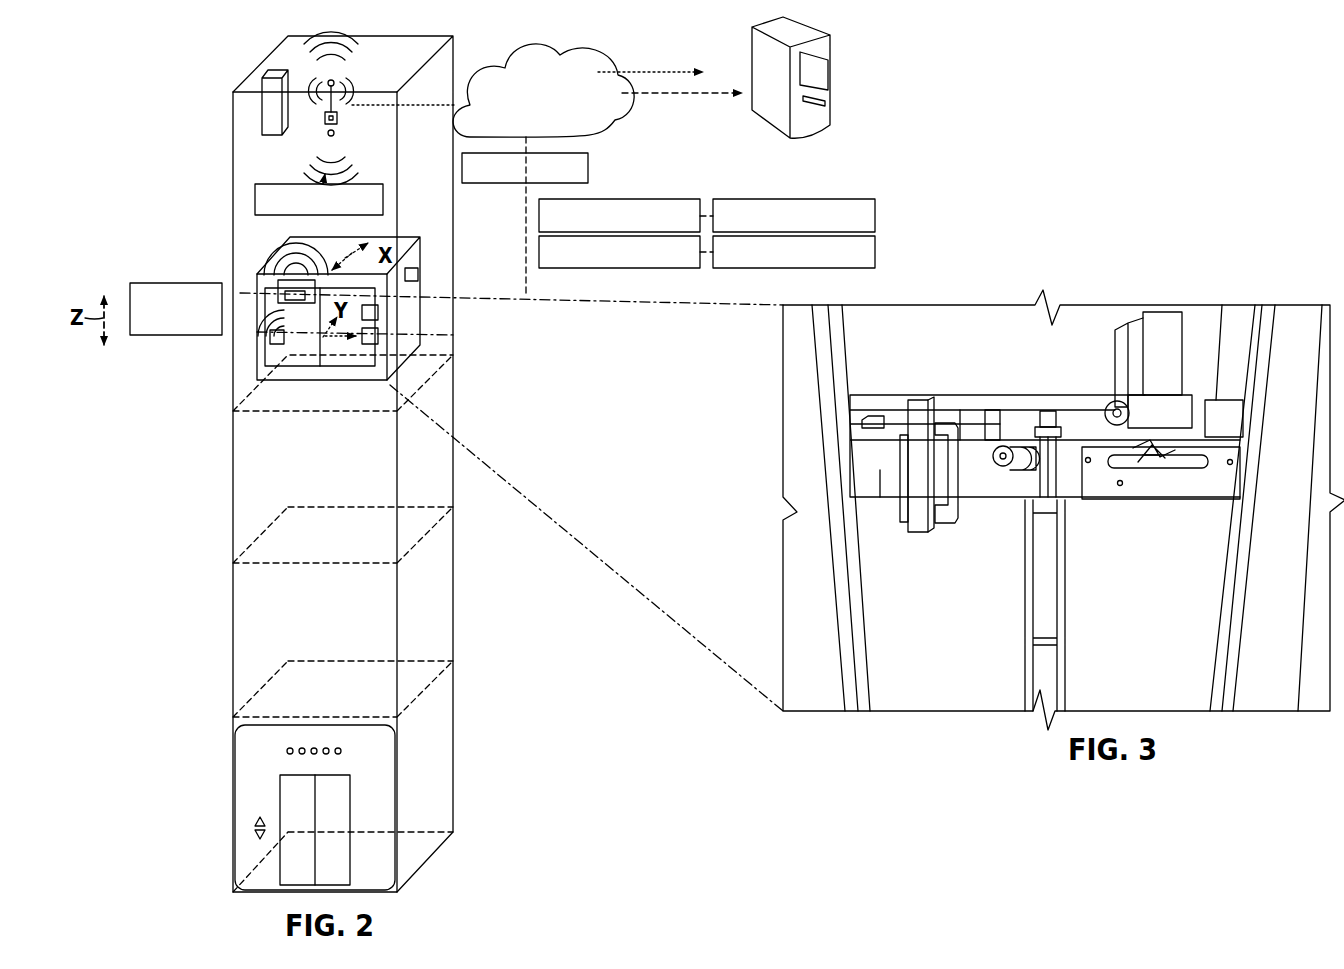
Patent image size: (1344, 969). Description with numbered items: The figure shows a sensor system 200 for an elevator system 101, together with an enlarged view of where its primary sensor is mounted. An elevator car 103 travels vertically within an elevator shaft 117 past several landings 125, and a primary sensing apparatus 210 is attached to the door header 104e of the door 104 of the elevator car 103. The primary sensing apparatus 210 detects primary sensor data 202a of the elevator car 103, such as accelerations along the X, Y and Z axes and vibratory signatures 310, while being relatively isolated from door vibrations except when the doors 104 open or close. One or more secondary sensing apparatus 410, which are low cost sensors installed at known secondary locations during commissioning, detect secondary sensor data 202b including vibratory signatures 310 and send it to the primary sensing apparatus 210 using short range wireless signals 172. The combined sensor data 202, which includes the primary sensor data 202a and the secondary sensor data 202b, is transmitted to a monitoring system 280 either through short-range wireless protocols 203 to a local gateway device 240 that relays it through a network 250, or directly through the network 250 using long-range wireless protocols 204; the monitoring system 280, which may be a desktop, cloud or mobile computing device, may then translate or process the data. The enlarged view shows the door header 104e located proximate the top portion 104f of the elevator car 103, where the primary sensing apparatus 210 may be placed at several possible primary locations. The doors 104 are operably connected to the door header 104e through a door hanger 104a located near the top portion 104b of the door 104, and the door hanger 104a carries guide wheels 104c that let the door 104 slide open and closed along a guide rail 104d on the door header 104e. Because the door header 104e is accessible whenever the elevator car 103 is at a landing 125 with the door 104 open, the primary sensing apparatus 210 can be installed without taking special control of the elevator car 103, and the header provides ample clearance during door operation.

In FIG. 2, the sensor system 200 is at (190, 100).
In FIG. 2, the elevator system 101 is at (170, 447).
In FIG. 2, the elevator car 103 is at (258, 353).
In FIG. 2, the door 104 is at (290, 358).
In FIG. 3, the door 104 is at (948, 697).
In FIG. 3, the door hanger 104a is at (930, 475).
In FIG. 3, the top portion of the door 104b is at (1145, 498).
In FIG. 3, the guide wheels 104c is at (1012, 465).
In FIG. 3, the guide rail 104d is at (1066, 470).
In FIG. 2, the door header 104e is at (418, 269).
In FIG. 3, the door header 104e is at (1003, 433).
In FIG. 3, the top portion of the elevator car 104f is at (993, 420).
In FIG. 2, the elevator shaft 117 is at (277, 170).
In FIG. 2, the landing 125 is at (290, 411).
In FIG. 2, the short range wireless signals 172 is at (290, 265).
In FIG. 2, the sensor data 202 is at (256, 192).
In FIG. 2, the primary sensor data 202a is at (686, 199).
In FIG. 2, the secondary sensor data 202b is at (140, 284).
In FIG. 2, the short-range wireless protocols 203 is at (310, 215).
In FIG. 2, the long-range wireless protocols 204 is at (530, 296).
In FIG. 2, the primary sensing apparatus 210 is at (283, 290).
In FIG. 3, the primary sensing apparatus 210 is at (878, 427).
In FIG. 2, the local gateway device 240 is at (339, 118).
In FIG. 2, the network 250 is at (630, 110).
In FIG. 2, the monitoring system 280 is at (833, 120).
In FIG. 2, the vibratory signatures 310 is at (876, 208).
In FIG. 2, the secondary sensing apparatus 410 is at (268, 338).